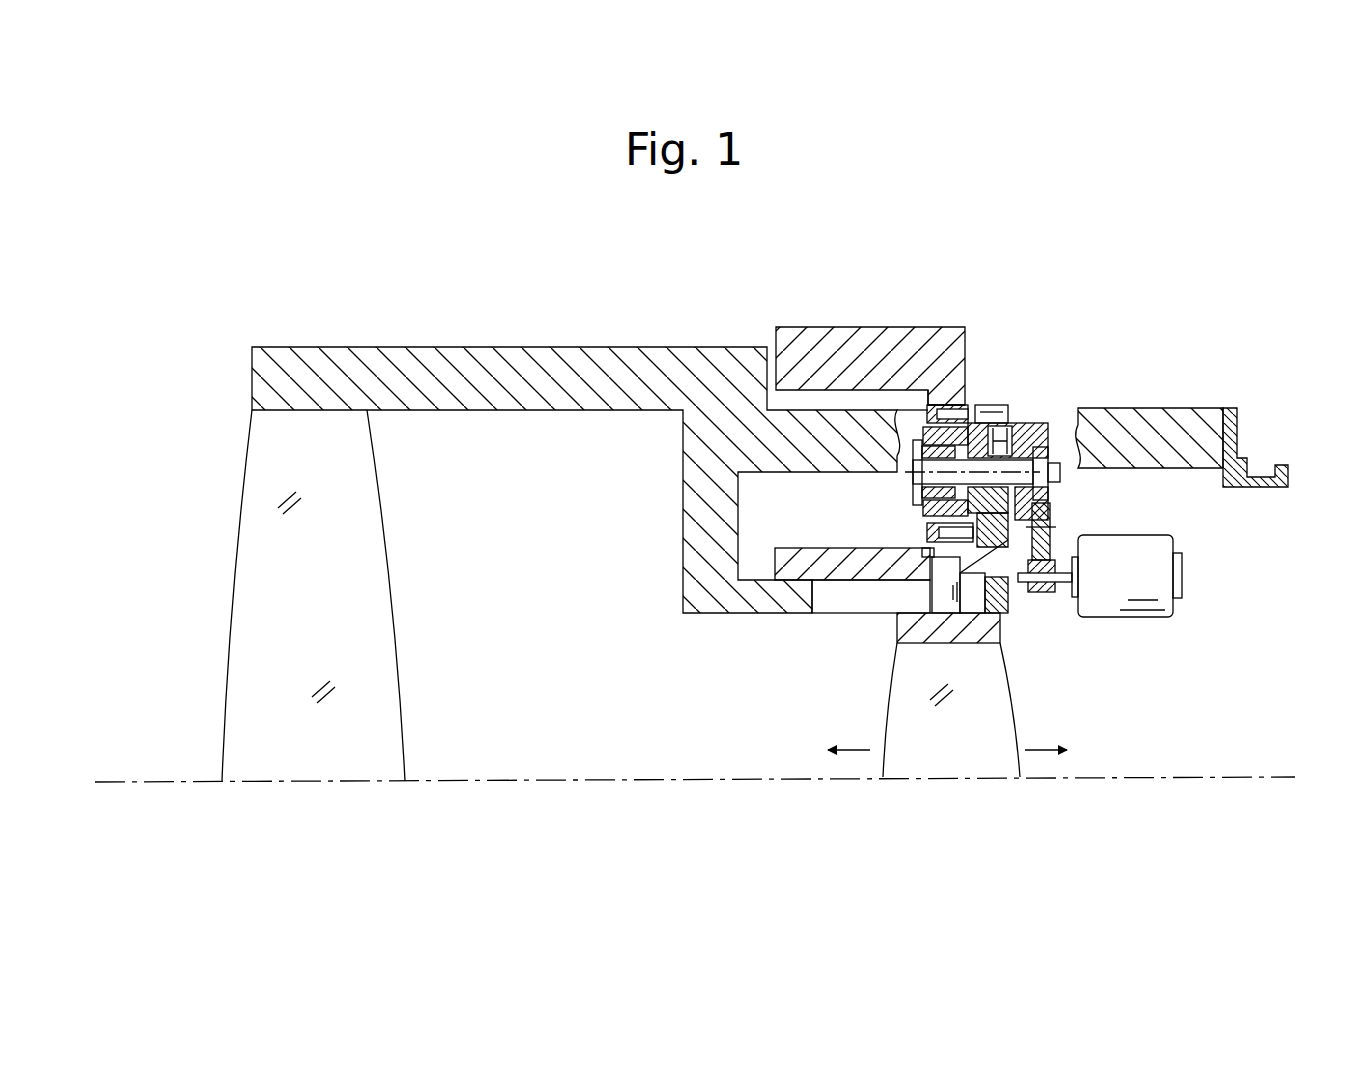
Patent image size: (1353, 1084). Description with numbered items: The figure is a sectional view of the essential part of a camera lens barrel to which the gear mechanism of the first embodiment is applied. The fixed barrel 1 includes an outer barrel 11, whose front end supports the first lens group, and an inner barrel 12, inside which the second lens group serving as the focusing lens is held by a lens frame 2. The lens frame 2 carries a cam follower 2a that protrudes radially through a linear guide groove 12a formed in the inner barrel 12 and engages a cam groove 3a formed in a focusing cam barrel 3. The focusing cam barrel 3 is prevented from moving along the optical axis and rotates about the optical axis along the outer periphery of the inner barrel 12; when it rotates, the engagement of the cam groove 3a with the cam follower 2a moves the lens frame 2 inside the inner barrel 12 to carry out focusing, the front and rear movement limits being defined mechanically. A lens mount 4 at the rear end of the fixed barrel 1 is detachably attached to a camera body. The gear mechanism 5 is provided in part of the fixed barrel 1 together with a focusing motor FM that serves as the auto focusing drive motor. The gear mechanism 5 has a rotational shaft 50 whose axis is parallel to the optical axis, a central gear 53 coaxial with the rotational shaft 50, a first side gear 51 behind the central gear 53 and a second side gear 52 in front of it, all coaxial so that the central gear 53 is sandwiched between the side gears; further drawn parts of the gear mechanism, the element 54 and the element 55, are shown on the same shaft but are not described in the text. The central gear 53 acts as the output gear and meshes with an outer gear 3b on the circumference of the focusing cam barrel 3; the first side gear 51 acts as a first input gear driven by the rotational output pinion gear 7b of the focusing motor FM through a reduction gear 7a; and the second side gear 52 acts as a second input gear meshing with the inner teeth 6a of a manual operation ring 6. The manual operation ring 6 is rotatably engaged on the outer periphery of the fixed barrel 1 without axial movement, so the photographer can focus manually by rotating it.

The fixed barrel 1 is at (446, 340).
The lens frame 2 is at (920, 635).
The cam follower 2a is at (935, 590).
The focusing cam barrel 3 is at (795, 548).
The cam groove 3a is at (925, 547).
The outer gear 3b is at (1008, 590).
The lens mount 4 is at (1243, 468).
The gear mechanism 5 is at (995, 410).
The manual operation ring 6 is at (848, 338).
The inner teeth 6a is at (968, 400).
The reduction gear 7a is at (1050, 527).
The rotational output pinion gear 7b is at (1047, 590).
The outer barrel 11 is at (740, 450).
The inner barrel 12 is at (710, 582).
The linear guide groove 12a is at (828, 603).
The rotational shaft 50 is at (1058, 475).
The first side gear 51 is at (1050, 430).
The second side gear 52 is at (948, 405).
The central gear 53 is at (990, 405).
The bearing 54 is at (1018, 420).
The shaft 55 is at (912, 472).
The focusing motor FM is at (1140, 557).